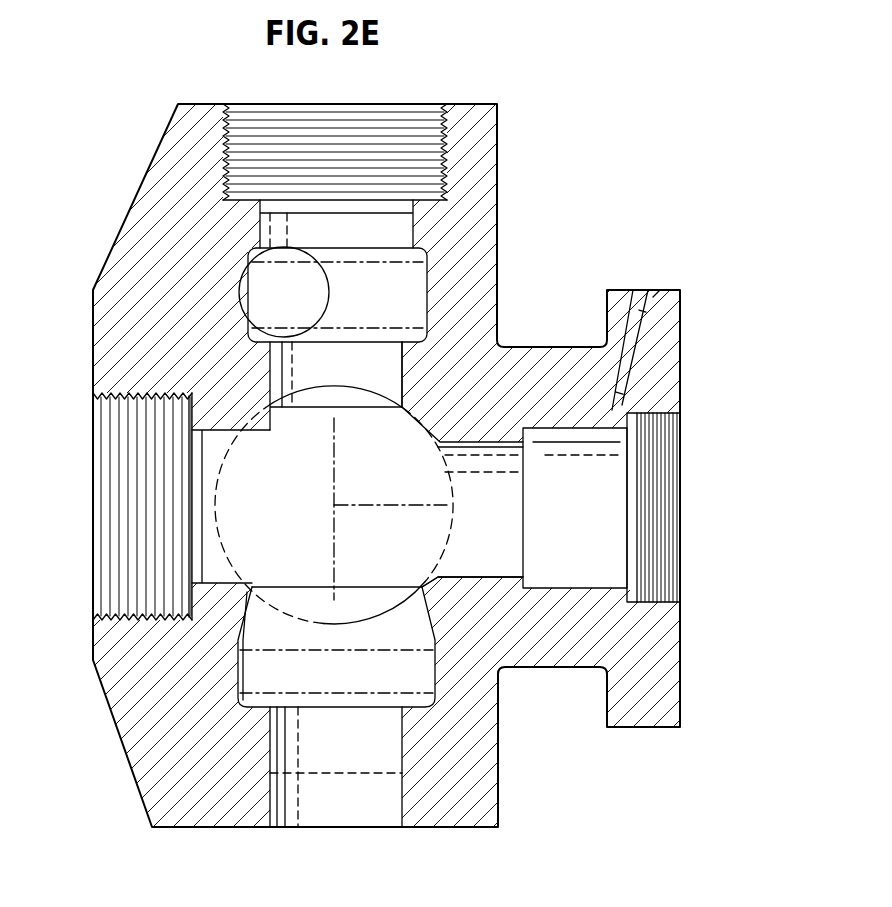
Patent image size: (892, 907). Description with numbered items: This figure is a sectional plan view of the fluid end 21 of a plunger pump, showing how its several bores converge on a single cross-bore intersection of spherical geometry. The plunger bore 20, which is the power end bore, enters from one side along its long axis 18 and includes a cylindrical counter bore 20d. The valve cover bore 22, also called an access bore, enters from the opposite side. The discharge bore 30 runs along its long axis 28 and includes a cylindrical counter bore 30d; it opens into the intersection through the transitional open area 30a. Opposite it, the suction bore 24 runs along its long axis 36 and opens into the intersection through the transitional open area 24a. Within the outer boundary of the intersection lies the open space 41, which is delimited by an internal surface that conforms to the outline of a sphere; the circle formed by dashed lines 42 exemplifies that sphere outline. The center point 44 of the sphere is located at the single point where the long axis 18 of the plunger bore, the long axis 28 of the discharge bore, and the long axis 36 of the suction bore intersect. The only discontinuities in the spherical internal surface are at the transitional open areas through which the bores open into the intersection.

The fluid end 21 is at (505, 64).
The discharge bore 30 is at (360, 308).
The transitional open area 30a is at (341, 396).
The cylindrical counter bore 30d is at (367, 363).
The long axis 18 is at (369, 505).
The long axis 28 is at (334, 432).
The center point 44 is at (334, 505).
The valve cover bore 22 is at (214, 565).
The long axis 36 is at (334, 577).
The transitional open area 24a is at (363, 598).
The suction bore 24 is at (311, 748).
The dashed lines 42 is at (446, 440).
The cylindrical counter bore 20d is at (495, 473).
The plunger bore 20 is at (610, 485).
The open space 41 is at (424, 549).